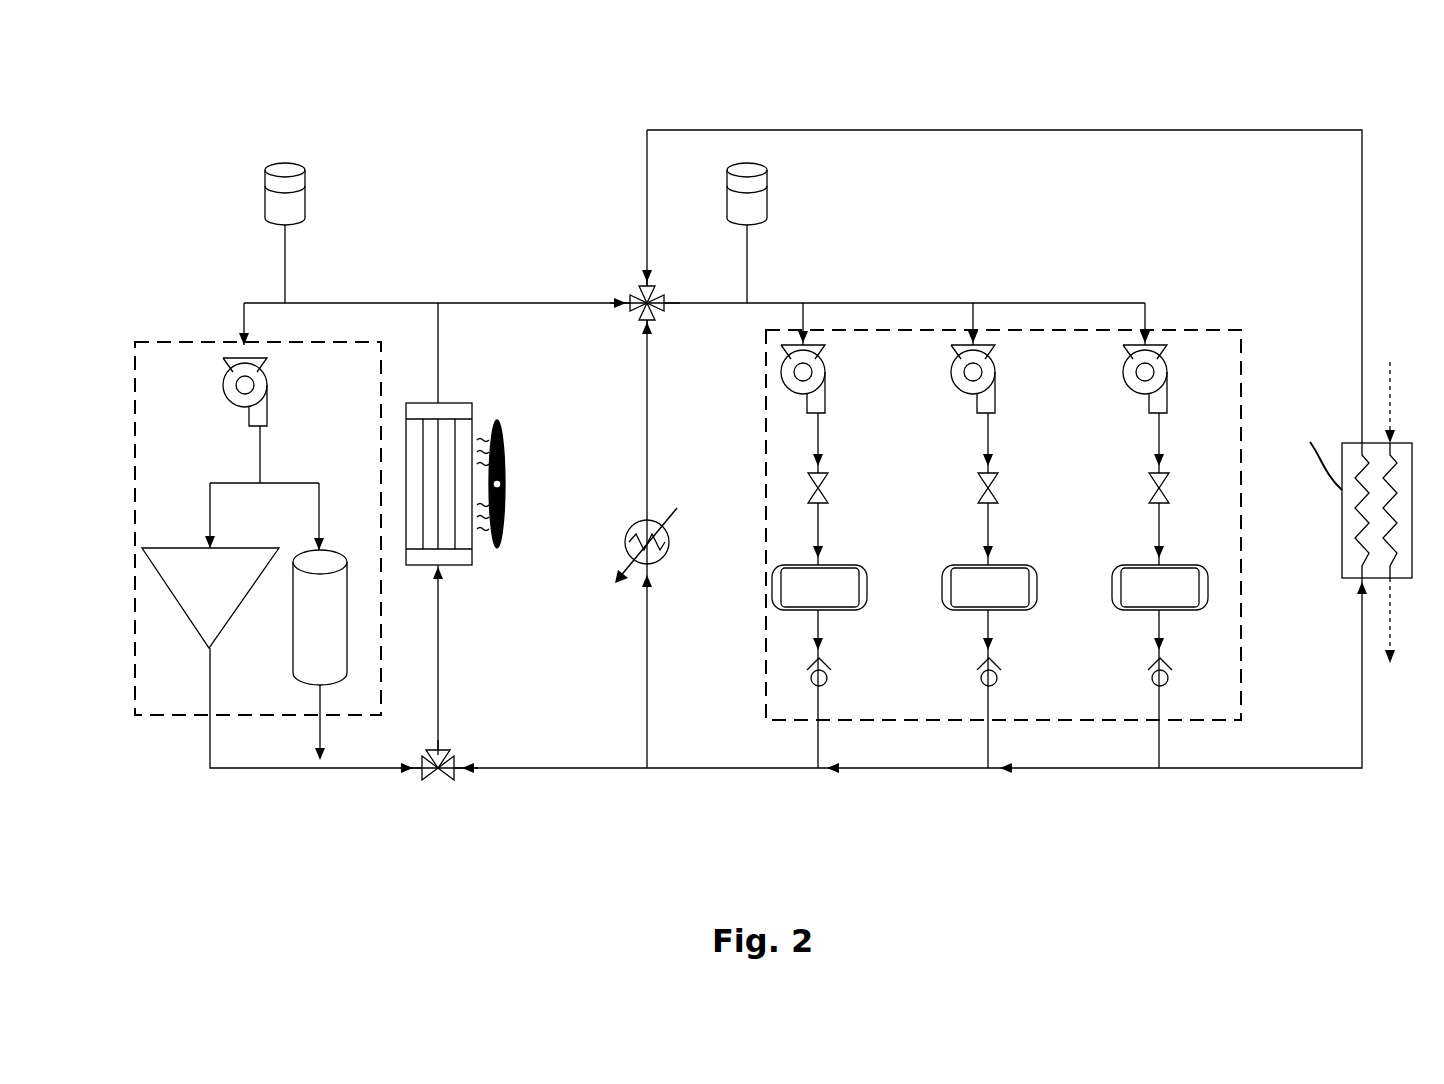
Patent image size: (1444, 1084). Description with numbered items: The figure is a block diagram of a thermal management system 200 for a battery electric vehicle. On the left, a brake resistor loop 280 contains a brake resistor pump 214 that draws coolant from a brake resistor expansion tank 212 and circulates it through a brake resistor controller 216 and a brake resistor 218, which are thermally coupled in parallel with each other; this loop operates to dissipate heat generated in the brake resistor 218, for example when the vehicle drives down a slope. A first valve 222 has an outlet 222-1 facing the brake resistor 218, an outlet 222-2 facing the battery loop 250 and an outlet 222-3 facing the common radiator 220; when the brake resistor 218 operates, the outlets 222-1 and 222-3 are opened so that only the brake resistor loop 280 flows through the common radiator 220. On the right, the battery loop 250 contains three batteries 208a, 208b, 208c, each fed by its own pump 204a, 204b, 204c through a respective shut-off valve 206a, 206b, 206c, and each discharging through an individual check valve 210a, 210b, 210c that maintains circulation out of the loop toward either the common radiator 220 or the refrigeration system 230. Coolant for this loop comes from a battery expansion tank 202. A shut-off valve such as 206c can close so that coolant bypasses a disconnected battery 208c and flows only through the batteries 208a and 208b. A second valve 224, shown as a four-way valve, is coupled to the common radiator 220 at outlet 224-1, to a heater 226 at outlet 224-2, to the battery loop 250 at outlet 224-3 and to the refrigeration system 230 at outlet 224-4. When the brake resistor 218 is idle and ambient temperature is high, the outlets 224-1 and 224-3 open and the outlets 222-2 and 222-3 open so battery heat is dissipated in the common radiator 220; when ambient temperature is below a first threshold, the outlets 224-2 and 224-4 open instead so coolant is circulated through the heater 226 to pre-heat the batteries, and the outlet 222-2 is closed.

The thermal management system 200 is at (1342, 110).
The battery expansion tank 202 is at (752, 168).
The pump 204a is at (818, 363).
The pump 204b is at (988, 363).
The pump 204c is at (1158, 363).
The shut-off valve 206a is at (816, 478).
The shut-off valve 206b is at (986, 478).
The shut-off valve 206c is at (1157, 478).
The battery 208a is at (797, 598).
The battery 208b is at (1020, 603).
The battery 208c is at (1193, 593).
The check valve 210a is at (827, 684).
The check valve 210b is at (988, 684).
The check valve 210c is at (1158, 684).
The brake resistor expansion tank 212 is at (293, 166).
The brake resistor pump 214 is at (248, 384).
The brake resistor controller 216 is at (195, 613).
The brake resistor 218 is at (295, 637).
The common radiator 220 is at (463, 565).
The first valve 222 is at (447, 812).
The outlet 222-1 is at (428, 773).
The outlet 222-2 is at (460, 760).
The outlet 222-3 is at (427, 760).
The second valve 224 is at (668, 282).
The outlet 224-1 is at (633, 293).
The outlet 224-2 is at (642, 320).
The outlet 224-3 is at (663, 308).
The outlet 224-4 is at (642, 287).
The heater 226 is at (652, 528).
The refrigeration system 230 is at (1342, 553).
The battery loop 250 is at (1242, 352).
The brake resistor loop 280 is at (135, 418).